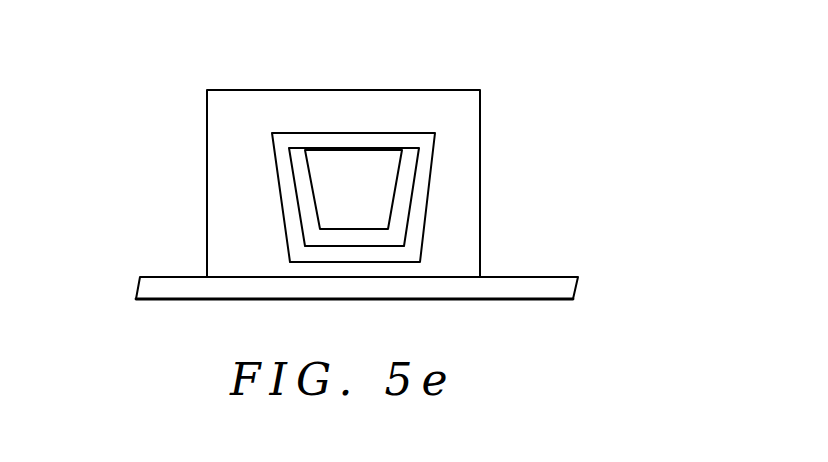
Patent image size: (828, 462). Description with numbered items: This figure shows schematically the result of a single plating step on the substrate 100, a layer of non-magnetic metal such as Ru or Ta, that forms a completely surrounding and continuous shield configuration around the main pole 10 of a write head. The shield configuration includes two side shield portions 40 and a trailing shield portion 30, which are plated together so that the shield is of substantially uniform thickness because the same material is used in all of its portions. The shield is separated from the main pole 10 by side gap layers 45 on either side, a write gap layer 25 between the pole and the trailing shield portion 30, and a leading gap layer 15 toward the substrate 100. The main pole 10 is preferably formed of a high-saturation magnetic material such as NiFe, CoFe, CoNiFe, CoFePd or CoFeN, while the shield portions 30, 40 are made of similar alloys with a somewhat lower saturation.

The main pole 10 is at (365, 170).
The leading gap layer 15 is at (353, 251).
The write gap layer 25 is at (316, 141).
The trailing shield portion 30 is at (278, 110).
The side shield portions 40 is at (222, 182).
The side gap layers 45 is at (427, 168).
The substrate 100 is at (560, 283).